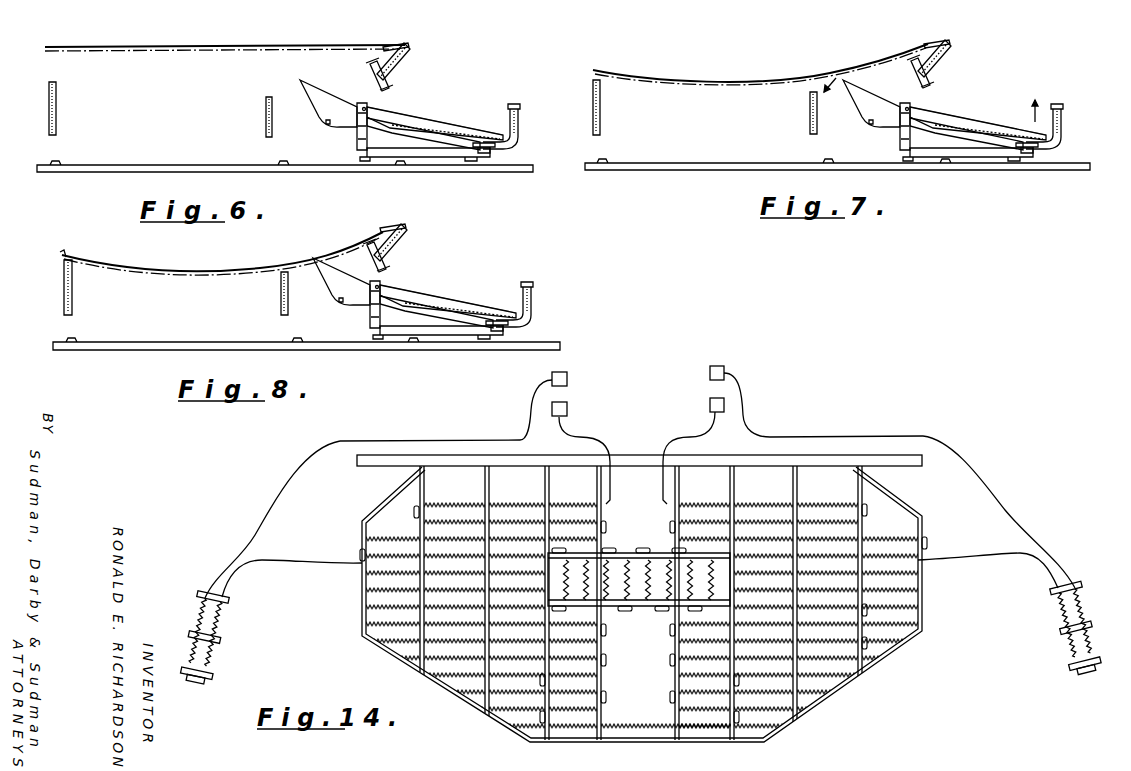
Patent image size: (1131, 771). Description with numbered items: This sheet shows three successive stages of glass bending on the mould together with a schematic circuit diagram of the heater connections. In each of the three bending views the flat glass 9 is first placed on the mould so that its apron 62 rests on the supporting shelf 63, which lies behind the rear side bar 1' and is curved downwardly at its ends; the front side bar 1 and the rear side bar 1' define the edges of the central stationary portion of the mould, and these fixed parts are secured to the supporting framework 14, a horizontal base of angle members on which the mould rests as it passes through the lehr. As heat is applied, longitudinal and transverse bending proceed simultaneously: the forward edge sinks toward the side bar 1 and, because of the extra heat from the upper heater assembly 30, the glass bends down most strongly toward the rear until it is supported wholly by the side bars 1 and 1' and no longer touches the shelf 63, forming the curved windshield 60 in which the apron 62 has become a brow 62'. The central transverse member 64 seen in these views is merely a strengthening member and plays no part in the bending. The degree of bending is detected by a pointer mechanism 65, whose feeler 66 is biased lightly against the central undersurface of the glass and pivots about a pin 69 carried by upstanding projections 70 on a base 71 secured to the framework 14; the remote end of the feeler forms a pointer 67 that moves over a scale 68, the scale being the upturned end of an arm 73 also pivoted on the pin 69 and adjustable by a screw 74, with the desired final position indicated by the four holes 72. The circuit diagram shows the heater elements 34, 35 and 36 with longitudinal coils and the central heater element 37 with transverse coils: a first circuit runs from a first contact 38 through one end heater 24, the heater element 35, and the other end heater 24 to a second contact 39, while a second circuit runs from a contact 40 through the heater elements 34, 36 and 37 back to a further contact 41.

In FIG. 6, the side bar 1 is at (62, 108).
In FIG. 7, the side bar 1 is at (607, 107).
In FIG. 8, the side bar 1 is at (78, 287).
In FIG. 6, the rear side bar 1' is at (368, 74).
In FIG. 7, the rear side bar 1' is at (911, 71).
In FIG. 8, the rear side bar 1' is at (367, 249).
In FIG. 6, the glass 9 is at (259, 48).
In FIG. 7, the glass 9 is at (744, 80).
In FIG. 6, the supporting framework 14 is at (210, 174).
In FIG. 7, the supporting framework 14 is at (707, 172).
In FIG. 8, the supporting framework 14 is at (233, 351).
In FIG. 14, the end heater 24 is at (218, 624).
In FIG. 14, the upper heater assembly 30 is at (910, 655).
In FIG. 14, the heater element 34 is at (798, 493).
In FIG. 14, the heater element 35 is at (540, 681).
In FIG. 14, the heater element 36 is at (570, 491).
In FIG. 14, the central heater element 37 is at (619, 608).
In FIG. 14, the first contact 38 is at (709, 375).
In FIG. 14, the second contact 39 is at (568, 383).
In FIG. 14, the contact 40 is at (709, 409).
In FIG. 14, the further contact 41 is at (568, 411).
In FIG. 8, the windshield 60 is at (248, 268).
In FIG. 6, the apron 62 is at (393, 36).
In FIG. 7, the apron 62 is at (925, 36).
In FIG. 8, the brow 62' is at (384, 217).
In FIG. 6, the supporting shelf 63 is at (411, 48).
In FIG. 7, the supporting shelf 63 is at (948, 43).
In FIG. 8, the supporting shelf 63 is at (409, 221).
In FIG. 6, the central transverse member 64 is at (266, 118).
In FIG. 7, the central transverse member 64 is at (810, 112).
In FIG. 8, the central transverse member 64 is at (281, 297).
In FIG. 6, the pointer mechanism 65 is at (456, 115).
In FIG. 7, the pointer mechanism 65 is at (992, 110).
In FIG. 8, the pointer mechanism 65 is at (480, 286).
In FIG. 6, the feeler 66 is at (326, 101).
In FIG. 7, the feeler 66 is at (861, 102).
In FIG. 8, the feeler 66 is at (332, 286).
In FIG. 6, the pointer 67 is at (422, 119).
In FIG. 7, the pointer 67 is at (955, 117).
In FIG. 8, the pointer 67 is at (435, 290).
In FIG. 6, the scale 68 is at (520, 112).
In FIG. 7, the scale 68 is at (1062, 113).
In FIG. 8, the scale 68 is at (525, 294).
In FIG. 6, the pin 69 is at (368, 111).
In FIG. 7, the pin 69 is at (912, 107).
In FIG. 8, the pin 69 is at (384, 284).
In FIG. 6, the upstanding projection 70 is at (357, 141).
In FIG. 7, the upstanding projection 70 is at (899, 140).
In FIG. 8, the upstanding projection 70 is at (371, 319).
In FIG. 6, the base 71 is at (405, 158).
In FIG. 7, the base 71 is at (962, 152).
In FIG. 8, the base 71 is at (422, 335).
In FIG. 6, the four holes 72 is at (513, 104).
In FIG. 7, the four holes 72 is at (1058, 108).
In FIG. 8, the four holes 72 is at (528, 287).
In FIG. 6, the arm 73 is at (445, 138).
In FIG. 7, the arm 73 is at (1000, 135).
In FIG. 8, the arm 73 is at (465, 315).
In FIG. 6, the screw 74 is at (496, 150).
In FIG. 7, the screw 74 is at (1040, 149).
In FIG. 8, the screw 74 is at (512, 330).